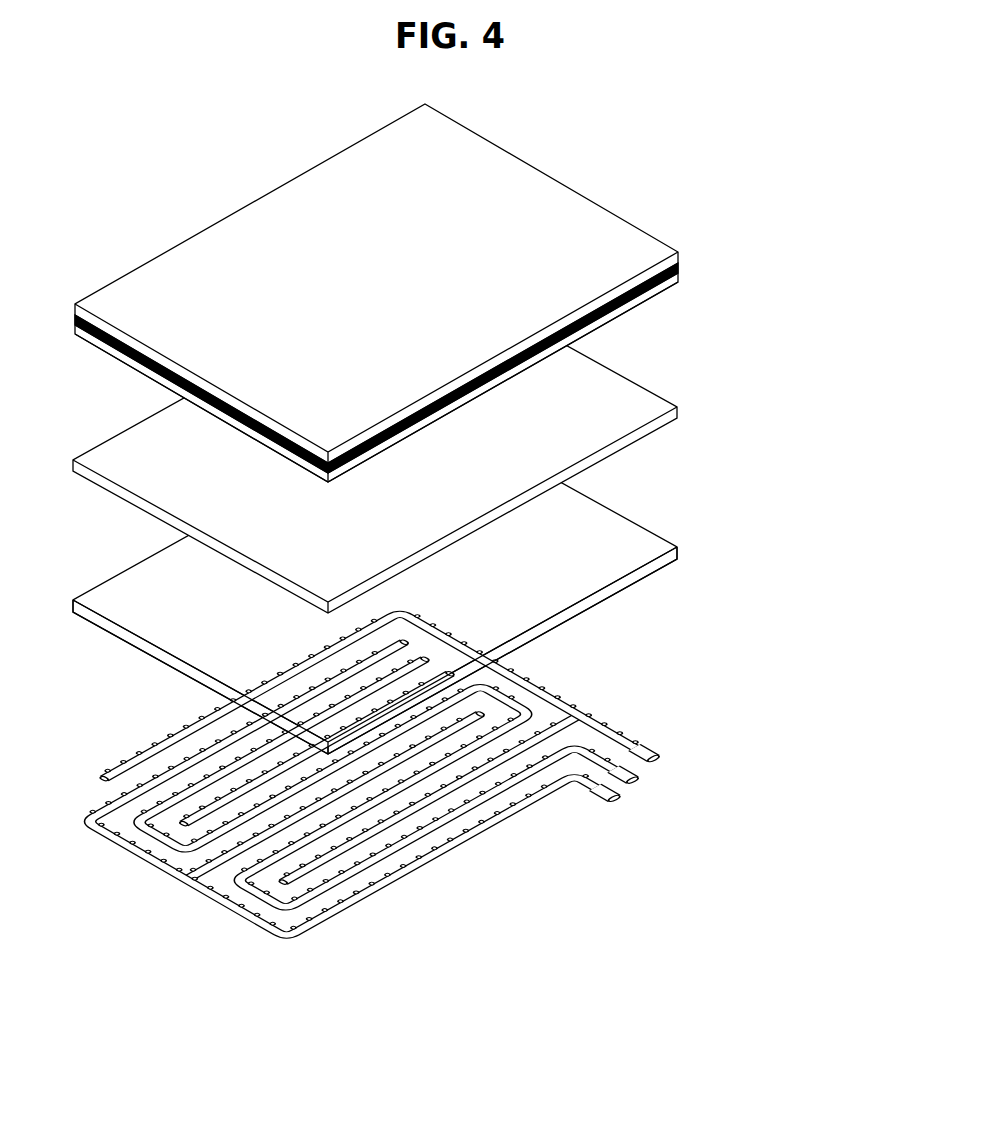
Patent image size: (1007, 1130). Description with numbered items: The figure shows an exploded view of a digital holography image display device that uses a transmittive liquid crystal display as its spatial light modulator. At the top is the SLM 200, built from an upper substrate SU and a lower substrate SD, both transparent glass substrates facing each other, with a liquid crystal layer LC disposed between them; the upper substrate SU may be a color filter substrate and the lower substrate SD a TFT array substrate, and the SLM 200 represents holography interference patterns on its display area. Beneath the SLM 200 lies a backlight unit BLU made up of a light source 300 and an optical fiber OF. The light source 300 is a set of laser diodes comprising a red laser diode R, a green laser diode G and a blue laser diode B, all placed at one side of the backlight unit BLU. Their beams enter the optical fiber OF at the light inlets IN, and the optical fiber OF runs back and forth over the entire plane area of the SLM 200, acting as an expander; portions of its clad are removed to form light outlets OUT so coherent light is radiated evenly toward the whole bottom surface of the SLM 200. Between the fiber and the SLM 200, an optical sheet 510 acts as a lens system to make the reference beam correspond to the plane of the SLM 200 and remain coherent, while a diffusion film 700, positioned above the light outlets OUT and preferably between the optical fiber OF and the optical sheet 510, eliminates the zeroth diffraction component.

The upper substrate SU is at (680, 256).
The liquid crystal layer LC is at (680, 268).
The lower substrate SD is at (680, 278).
The SLM 200 is at (440, 293).
The optical sheet 510 is at (679, 411).
The diffusion film 700 is at (679, 551).
The light outlets OUT is at (113, 768).
The light inlets IN is at (662, 742).
The red laser diode R is at (672, 762).
The green laser diode G is at (648, 783).
The blue laser diode B is at (628, 803).
The light source 300 is at (684, 789).
The backlight unit BLU is at (442, 783).
The optical fiber OF is at (497, 820).